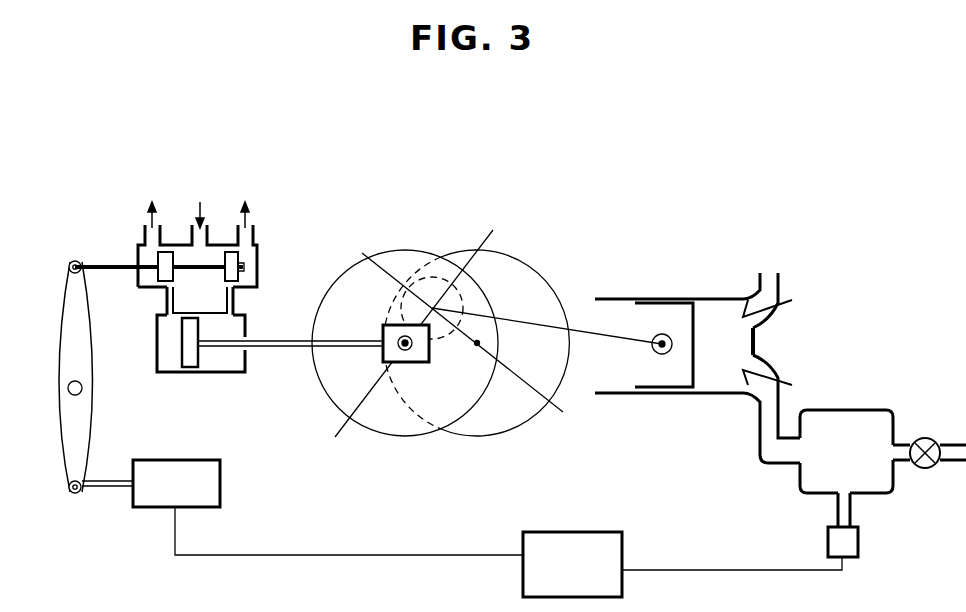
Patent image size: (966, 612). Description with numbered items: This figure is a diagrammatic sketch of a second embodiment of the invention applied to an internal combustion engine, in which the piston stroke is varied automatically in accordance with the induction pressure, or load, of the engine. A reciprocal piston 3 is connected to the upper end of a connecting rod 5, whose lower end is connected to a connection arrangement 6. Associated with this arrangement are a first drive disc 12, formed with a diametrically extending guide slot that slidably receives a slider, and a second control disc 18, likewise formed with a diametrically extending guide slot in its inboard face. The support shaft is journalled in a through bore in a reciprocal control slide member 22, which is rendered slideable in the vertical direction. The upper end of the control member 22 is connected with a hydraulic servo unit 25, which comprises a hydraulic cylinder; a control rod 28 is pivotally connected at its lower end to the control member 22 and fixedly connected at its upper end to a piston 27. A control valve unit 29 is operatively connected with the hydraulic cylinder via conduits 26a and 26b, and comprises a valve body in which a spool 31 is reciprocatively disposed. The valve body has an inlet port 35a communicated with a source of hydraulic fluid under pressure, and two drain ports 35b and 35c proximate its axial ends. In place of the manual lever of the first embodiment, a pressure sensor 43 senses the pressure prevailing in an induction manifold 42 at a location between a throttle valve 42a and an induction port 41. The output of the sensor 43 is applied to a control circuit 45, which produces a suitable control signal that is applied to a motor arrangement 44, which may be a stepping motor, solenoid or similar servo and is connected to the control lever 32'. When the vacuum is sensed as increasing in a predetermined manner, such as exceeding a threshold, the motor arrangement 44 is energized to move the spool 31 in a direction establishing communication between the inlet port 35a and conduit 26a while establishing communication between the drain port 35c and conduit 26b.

The piston 3 is at (680, 305).
The connecting rod 5 is at (600, 337).
The connection arrangement 6 is at (445, 278).
The first drive disc 12 is at (528, 273).
The second control disc 18 is at (392, 258).
The reciprocal control slide member 22 is at (403, 363).
The hydraulic servo unit 25 is at (217, 372).
The conduit 26a is at (160, 302).
The conduit 26b is at (240, 302).
The piston 27 is at (188, 360).
The control rod 28 is at (282, 355).
The control valve unit 29 is at (248, 262).
The spool 31 is at (190, 262).
The control lever 32' is at (57, 377).
The inlet port 35a is at (203, 240).
The drain port 35b is at (148, 240).
The drain port 35c is at (248, 240).
The induction port 41 is at (760, 367).
The induction manifold 42 is at (867, 417).
The throttle valve 42a is at (923, 468).
The pressure sensor 43 is at (828, 533).
The motor arrangement 44 is at (213, 482).
The control circuit 45 is at (585, 538).